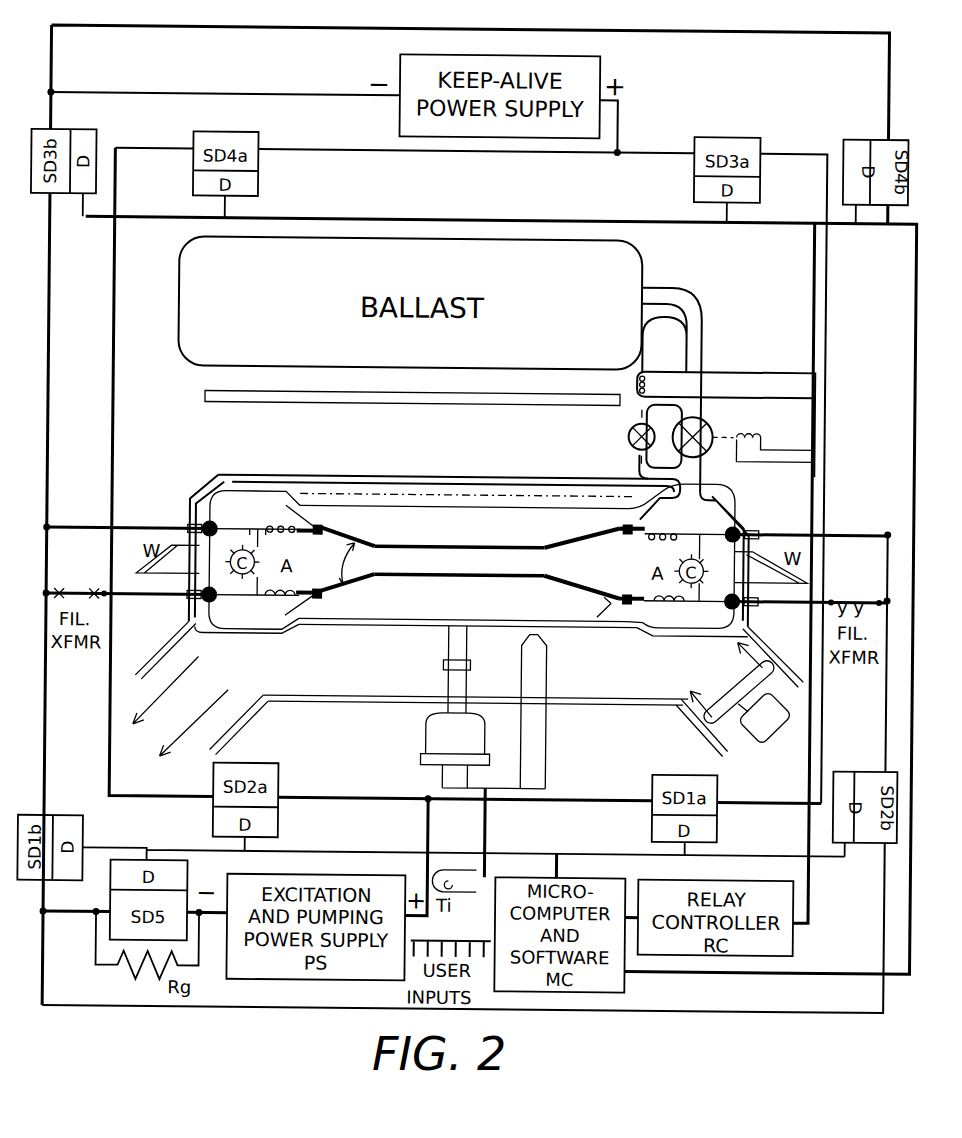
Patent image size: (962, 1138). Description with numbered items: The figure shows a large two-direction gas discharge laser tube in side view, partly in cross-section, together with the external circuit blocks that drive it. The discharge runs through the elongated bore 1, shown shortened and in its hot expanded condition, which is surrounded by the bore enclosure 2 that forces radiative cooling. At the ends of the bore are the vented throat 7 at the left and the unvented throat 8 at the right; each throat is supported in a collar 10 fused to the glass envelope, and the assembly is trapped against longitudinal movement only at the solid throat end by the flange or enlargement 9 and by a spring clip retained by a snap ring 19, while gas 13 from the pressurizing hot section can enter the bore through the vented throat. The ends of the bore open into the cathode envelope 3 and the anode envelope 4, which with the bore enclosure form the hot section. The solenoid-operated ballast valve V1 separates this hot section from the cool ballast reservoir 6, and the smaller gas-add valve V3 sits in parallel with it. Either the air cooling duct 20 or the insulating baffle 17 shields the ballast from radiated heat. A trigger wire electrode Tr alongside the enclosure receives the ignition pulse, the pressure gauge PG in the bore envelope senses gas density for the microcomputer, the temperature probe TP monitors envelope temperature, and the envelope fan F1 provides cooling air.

The bore 1 is at (413, 550).
The bore enclosure 2 is at (341, 626).
The cathode envelope 3 is at (236, 631).
The anode envelope 4 is at (686, 627).
The ballast reservoir 6 is at (643, 286).
The throat 7 is at (372, 583).
The throat 8 is at (570, 581).
The flange or enlargement 9 is at (637, 535).
The collars 10 is at (313, 532).
The gas 13 is at (347, 541).
The insulating baffle 17 is at (212, 401).
The snap ring 19 is at (592, 538).
The air cooling duct 20 is at (339, 696).
The ballast valve V1 is at (708, 434).
The gas-add valve V3 is at (623, 436).
The envelope fan F1 is at (747, 701).
The wire electrode Tr is at (216, 481).
The pressure gauge PG is at (483, 707).
The temperature probe TP is at (543, 637).